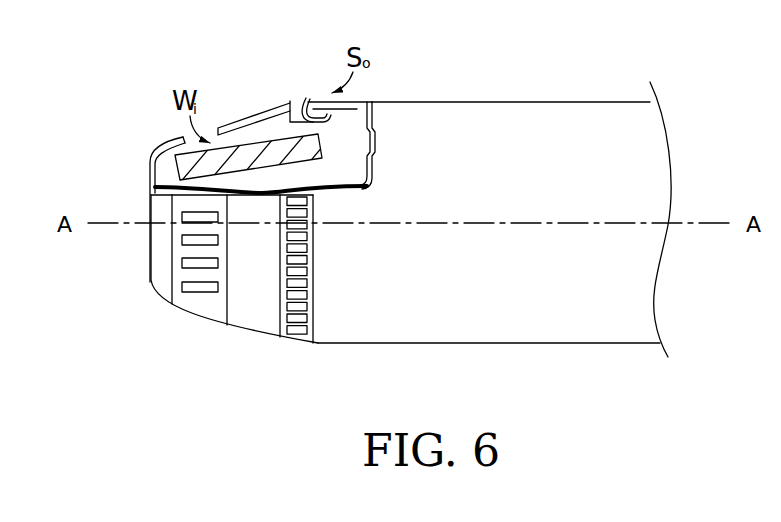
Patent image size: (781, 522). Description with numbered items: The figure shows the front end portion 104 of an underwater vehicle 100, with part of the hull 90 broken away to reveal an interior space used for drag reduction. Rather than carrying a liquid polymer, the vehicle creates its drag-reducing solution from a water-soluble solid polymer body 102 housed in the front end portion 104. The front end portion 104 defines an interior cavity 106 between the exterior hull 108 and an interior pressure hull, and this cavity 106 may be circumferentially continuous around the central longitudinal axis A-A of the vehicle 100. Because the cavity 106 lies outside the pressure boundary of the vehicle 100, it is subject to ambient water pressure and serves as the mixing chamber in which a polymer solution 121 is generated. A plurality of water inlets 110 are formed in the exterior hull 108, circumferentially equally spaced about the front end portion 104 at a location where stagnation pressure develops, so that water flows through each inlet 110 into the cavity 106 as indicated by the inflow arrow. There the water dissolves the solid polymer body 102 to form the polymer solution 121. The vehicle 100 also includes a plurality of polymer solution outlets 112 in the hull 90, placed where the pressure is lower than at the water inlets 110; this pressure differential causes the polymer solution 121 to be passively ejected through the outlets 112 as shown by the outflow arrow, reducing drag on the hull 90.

The hull 90 is at (606, 112).
The vehicle 100 is at (597, 345).
The water-soluble solid polymer body 102 is at (237, 156).
The front end portion 104 is at (249, 343).
The interior cavity 106 is at (350, 158).
The exterior hull 108 is at (485, 101).
The water inlets 110 is at (187, 138).
The polymer solution outlets 112 is at (308, 265).
The polymer solution 121 is at (314, 98).